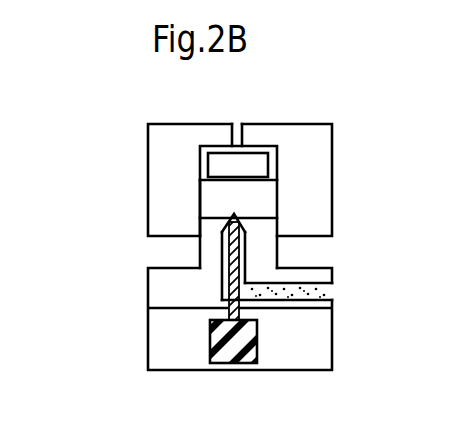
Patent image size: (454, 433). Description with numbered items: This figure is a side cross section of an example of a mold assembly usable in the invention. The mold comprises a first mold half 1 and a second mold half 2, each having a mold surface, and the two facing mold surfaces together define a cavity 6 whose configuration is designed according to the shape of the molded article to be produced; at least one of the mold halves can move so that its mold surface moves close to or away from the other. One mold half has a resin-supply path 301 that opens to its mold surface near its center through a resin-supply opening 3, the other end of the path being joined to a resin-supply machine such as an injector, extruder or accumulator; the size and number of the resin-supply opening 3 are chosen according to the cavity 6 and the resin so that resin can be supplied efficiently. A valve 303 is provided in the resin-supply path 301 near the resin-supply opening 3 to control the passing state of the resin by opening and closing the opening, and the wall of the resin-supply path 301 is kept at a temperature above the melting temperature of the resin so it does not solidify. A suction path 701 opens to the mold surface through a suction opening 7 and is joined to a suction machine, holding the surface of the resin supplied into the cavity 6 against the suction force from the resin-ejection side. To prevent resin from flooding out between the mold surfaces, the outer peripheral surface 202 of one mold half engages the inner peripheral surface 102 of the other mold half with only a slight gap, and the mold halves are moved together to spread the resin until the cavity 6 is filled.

The first mold half 1 is at (305, 152).
The second mold half 2 is at (305, 333).
The resin-supply opening 3 is at (235, 218).
The cavity 6 is at (212, 195).
The suction opening 7 is at (273, 165).
The suction path 701 is at (277, 97).
The inner peripheral surface 102 is at (195, 208).
The outer peripheral surface 202 is at (195, 252).
The resin-supply path 301 is at (290, 290).
The valve 303 is at (255, 343).